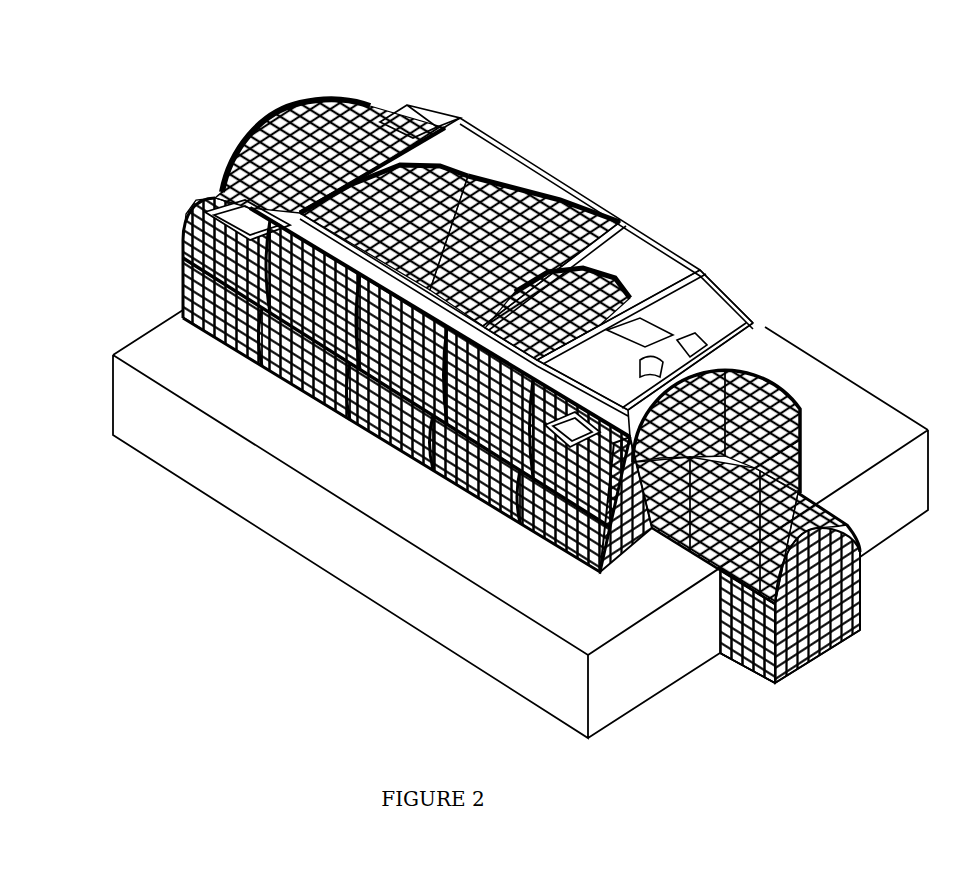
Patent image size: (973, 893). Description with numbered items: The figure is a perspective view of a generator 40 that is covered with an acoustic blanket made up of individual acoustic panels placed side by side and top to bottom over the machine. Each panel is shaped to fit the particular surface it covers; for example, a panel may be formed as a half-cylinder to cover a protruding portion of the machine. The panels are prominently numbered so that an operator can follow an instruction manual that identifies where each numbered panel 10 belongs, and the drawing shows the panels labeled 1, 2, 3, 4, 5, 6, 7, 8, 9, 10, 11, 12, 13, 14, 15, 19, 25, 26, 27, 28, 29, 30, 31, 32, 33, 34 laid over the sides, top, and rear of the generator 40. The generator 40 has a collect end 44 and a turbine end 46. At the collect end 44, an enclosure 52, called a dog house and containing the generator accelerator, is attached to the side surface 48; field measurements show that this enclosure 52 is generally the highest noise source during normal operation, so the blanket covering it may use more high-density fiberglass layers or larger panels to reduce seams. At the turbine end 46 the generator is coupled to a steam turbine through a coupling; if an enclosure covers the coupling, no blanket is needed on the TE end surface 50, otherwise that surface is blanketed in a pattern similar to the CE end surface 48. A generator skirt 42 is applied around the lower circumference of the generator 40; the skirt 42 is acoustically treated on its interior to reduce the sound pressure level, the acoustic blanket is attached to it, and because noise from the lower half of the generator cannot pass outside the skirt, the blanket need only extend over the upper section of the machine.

The side mesh panel 1 is at (222, 312).
The side mesh panel 2 is at (306, 364).
The side mesh panel 3 is at (391, 416).
The side mesh panel 4 is at (476, 469).
The side mesh panel 5 is at (565, 521).
The upper side mesh panel 6 is at (236, 255).
The upper side mesh panel 7 is at (315, 294).
The upper side mesh panel 8 is at (403, 349).
The upper side mesh panel 9 is at (490, 402).
The numbered panel 10 is at (581, 453).
The front hood mesh region 11 is at (330, 156).
The roof mesh region 12 is at (384, 227).
The roof mesh region 13 is at (525, 251).
The rear roof mesh region 14 is at (557, 314).
The windshield frame member 15 is at (404, 111).
The rear frame cell 19 is at (665, 340).
The rear face mesh region 25 is at (626, 504).
The tunnel mesh region 26 is at (656, 504).
The rear fan mesh region 27 is at (679, 416).
The rear fan mesh region 28 is at (762, 419).
The rear fan mesh region 29 is at (777, 451).
The tunnel mesh region 30 is at (725, 526).
The tunnel mesh region 31 is at (779, 537).
The tunnel end arch mesh region 32 is at (817, 548).
The outlet block front face 33 is at (747, 626).
The outlet block end face 34 is at (817, 605).
The generator 40 is at (522, 220).
The generator skirt 42 is at (857, 410).
The collect end 44 is at (868, 701).
The turbine end 46 is at (181, 141).
The side surface 48 is at (780, 390).
The TE end surface 50 is at (273, 118).
The enclosure 52 is at (745, 658).